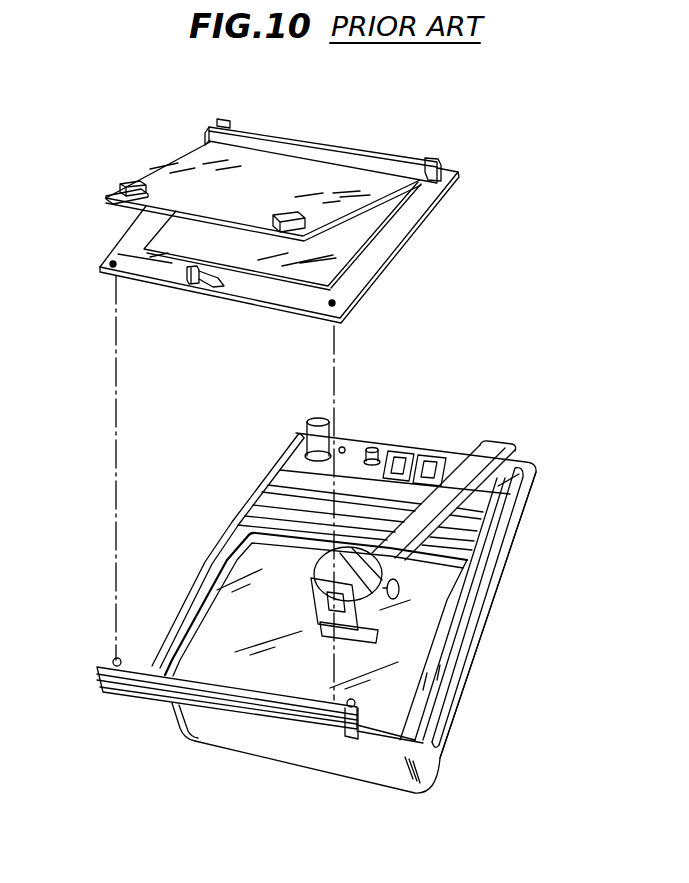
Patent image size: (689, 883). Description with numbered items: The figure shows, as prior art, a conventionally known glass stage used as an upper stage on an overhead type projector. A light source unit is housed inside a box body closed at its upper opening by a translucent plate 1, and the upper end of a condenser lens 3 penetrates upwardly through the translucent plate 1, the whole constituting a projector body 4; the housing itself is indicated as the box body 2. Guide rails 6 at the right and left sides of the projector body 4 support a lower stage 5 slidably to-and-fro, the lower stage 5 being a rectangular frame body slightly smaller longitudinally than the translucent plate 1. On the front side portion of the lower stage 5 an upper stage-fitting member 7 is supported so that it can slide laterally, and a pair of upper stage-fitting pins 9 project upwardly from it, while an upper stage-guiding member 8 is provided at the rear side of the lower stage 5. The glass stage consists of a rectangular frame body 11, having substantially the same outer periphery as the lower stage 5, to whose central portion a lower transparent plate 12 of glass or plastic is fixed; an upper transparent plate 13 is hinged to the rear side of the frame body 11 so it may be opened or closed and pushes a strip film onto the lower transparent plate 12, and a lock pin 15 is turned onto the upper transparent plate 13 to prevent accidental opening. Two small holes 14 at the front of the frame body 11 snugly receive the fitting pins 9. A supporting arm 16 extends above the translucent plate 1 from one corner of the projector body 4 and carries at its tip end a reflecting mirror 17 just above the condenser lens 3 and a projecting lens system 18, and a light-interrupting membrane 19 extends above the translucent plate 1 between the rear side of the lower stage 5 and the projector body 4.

The translucent plate 1 is at (247, 667).
The housing 2 is at (327, 765).
The condenser lens 3 is at (380, 620).
The projector body 4 is at (250, 759).
The lower stage 5 is at (427, 673).
The guide rails 6 is at (283, 458).
The upper stage-fitting member 7 is at (133, 692).
The upper stage-guiding member 8 is at (337, 533).
The upper stage-fitting pins 9 is at (119, 658).
The rectangular frame body 11 is at (410, 212).
The lower transparent plate 12 is at (348, 242).
The upper transparent plate 13 is at (312, 178).
The small holes 14 is at (109, 273).
The lock pin 15 is at (216, 292).
The supporting arm 16 is at (452, 498).
The reflecting mirror 17 is at (317, 607).
The projecting lens system 18 is at (472, 563).
The light-interrupting membrane 19 is at (283, 490).